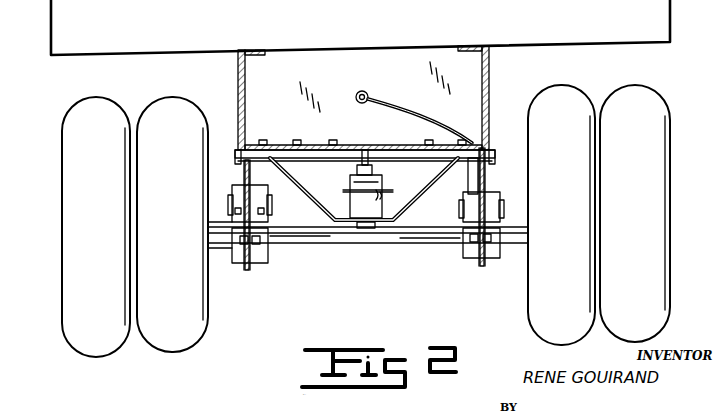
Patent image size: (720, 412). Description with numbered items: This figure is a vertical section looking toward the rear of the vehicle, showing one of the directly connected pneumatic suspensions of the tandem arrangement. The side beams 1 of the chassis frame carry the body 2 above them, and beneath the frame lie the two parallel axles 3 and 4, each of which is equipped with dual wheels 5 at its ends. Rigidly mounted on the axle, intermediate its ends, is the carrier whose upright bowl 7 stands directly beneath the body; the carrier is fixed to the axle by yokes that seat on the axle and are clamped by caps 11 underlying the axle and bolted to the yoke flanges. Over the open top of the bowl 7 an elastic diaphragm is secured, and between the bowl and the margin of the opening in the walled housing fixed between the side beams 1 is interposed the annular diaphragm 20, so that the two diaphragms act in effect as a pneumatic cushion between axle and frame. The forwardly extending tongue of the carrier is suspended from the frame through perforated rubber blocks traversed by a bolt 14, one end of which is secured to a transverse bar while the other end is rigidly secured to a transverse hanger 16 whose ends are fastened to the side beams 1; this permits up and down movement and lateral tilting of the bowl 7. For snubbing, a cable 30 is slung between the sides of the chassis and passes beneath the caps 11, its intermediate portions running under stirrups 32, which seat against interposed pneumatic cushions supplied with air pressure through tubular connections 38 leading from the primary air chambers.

The side beams 1 is at (238, 76).
The body 2 is at (51, 17).
The axle 3 is at (318, 243).
The axle 4 is at (230, 207).
The dual wheels 5 is at (165, 352).
The bowl 7 is at (351, 189).
The caps 11 is at (265, 265).
The bolt 14 is at (364, 230).
The transverse hanger 16 is at (400, 224).
The annular diaphragm 20 is at (283, 150).
The cable 30 is at (248, 272).
The stirrups 32 is at (242, 270).
The tubular connections 38 is at (390, 106).